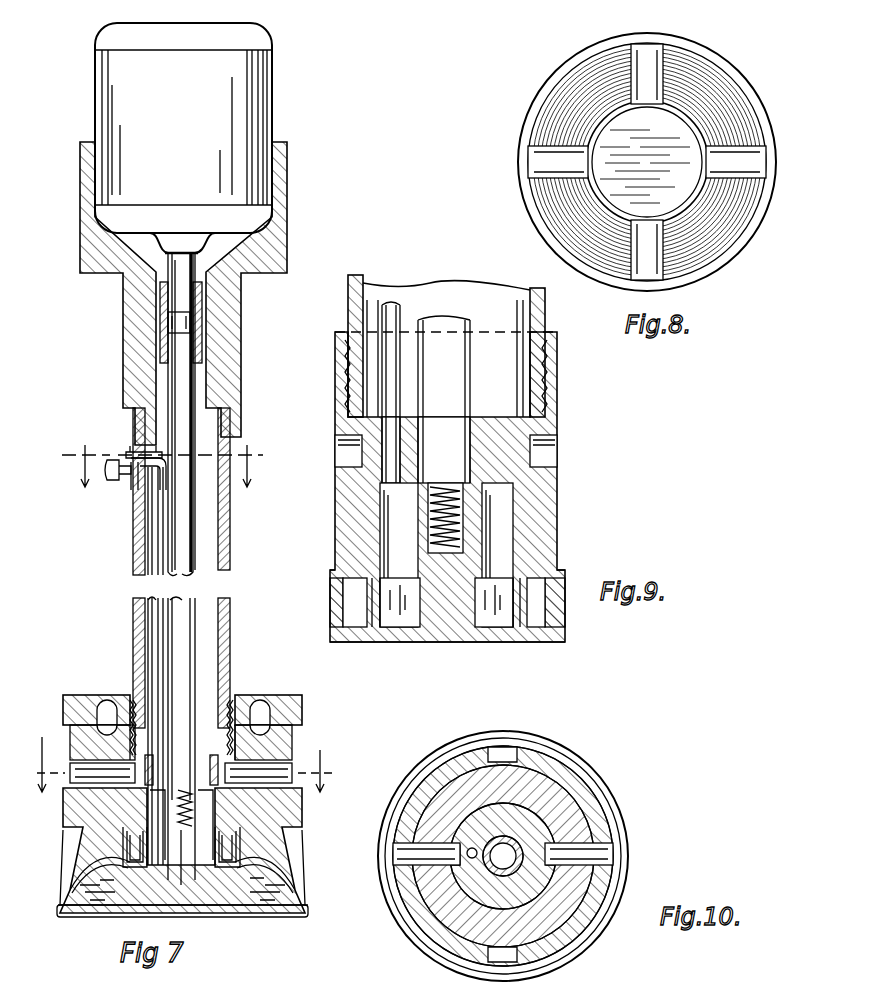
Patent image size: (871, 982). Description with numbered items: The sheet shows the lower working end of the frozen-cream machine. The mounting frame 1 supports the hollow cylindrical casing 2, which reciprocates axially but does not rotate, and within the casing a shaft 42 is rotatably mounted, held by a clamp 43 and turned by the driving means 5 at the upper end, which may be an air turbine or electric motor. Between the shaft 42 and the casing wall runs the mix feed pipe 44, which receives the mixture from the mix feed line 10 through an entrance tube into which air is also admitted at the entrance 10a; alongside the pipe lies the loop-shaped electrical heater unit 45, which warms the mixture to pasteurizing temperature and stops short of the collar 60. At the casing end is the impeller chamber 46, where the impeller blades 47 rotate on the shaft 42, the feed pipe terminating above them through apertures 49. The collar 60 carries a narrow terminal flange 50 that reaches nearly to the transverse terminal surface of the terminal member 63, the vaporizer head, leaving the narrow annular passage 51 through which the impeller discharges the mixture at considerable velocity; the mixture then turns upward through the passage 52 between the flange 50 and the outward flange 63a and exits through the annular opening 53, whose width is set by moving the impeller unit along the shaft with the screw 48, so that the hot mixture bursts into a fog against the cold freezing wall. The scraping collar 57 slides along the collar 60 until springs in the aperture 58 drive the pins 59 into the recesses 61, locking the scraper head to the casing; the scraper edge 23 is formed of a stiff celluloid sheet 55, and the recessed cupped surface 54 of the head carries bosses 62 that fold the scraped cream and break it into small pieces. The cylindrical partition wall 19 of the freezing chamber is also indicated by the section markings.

In FIG. 7, the mounting frame 1 is at (79, 226).
In FIG. 7, the cylindrical casing 2 is at (230, 526).
In FIG. 9, the cylindrical casing 2 is at (547, 312).
In FIG. 7, the driving means 5 is at (185, 106).
In FIG. 7, the mix feed line 10 is at (118, 479).
In FIG. 7, the air entrance 10a is at (134, 502).
In FIG. 7, the intermediate partition wall 19 is at (162, 465).
In FIG. 7, the scraper edge 23 is at (228, 920).
In FIG. 8, the scraper edge 23 is at (752, 222).
In FIG. 7, the shaft 42 is at (190, 392).
In FIG. 9, the shaft 42 is at (455, 375).
In FIG. 7, the clamp 43 is at (183, 322).
In FIG. 7, the mix feed pipe 44 is at (143, 541).
In FIG. 9, the mix feed pipe 44 is at (390, 400).
In FIG. 10, the mix feed pipe 44 is at (472, 848).
In FIG. 7, the electrical heater unit 45 is at (134, 450).
In FIG. 7, the impeller chamber 46 is at (285, 815).
In FIG. 7, the impeller blades 47 is at (196, 860).
In FIG. 7, the screw 48 is at (186, 830).
In FIG. 9, the screw 48 is at (440, 520).
In FIG. 7, the apertures 49 is at (150, 792).
In FIG. 9, the apertures 49 is at (380, 488).
In FIG. 7, the terminal flange 50 is at (133, 866).
In FIG. 9, the terminal flange 50 is at (372, 632).
In FIG. 9, the annular passage 51 is at (380, 635).
In FIG. 9, the passage 52 is at (346, 620).
In FIG. 9, the annular passage 53 is at (330, 574).
In FIG. 7, the cupped surface 54 is at (285, 880).
In FIG. 8, the cupped surface 54 is at (690, 62).
In FIG. 7, the celluloid sheet 55 is at (290, 904).
In FIG. 7, the scraping collar 57 is at (292, 737).
In FIG. 10, the scraping collar 57 is at (624, 822).
In FIG. 7, the aperture 58 is at (260, 703).
In FIG. 7, the pins 59 is at (292, 763).
In FIG. 10, the pins 59 is at (614, 849).
In FIG. 7, the collar 60 is at (201, 730).
In FIG. 9, the collar 60 is at (560, 407).
In FIG. 10, the collar 60 is at (525, 812).
In FIG. 7, the recesses 61 is at (202, 755).
In FIG. 9, the recesses 61 is at (558, 455).
In FIG. 10, the recesses 61 is at (555, 848).
In FIG. 8, the bosses 62 is at (528, 156).
In FIG. 7, the terminal member 63 is at (147, 870).
In FIG. 9, the terminal member 63 is at (495, 645).
In FIG. 9, the outward flange 63a is at (332, 597).